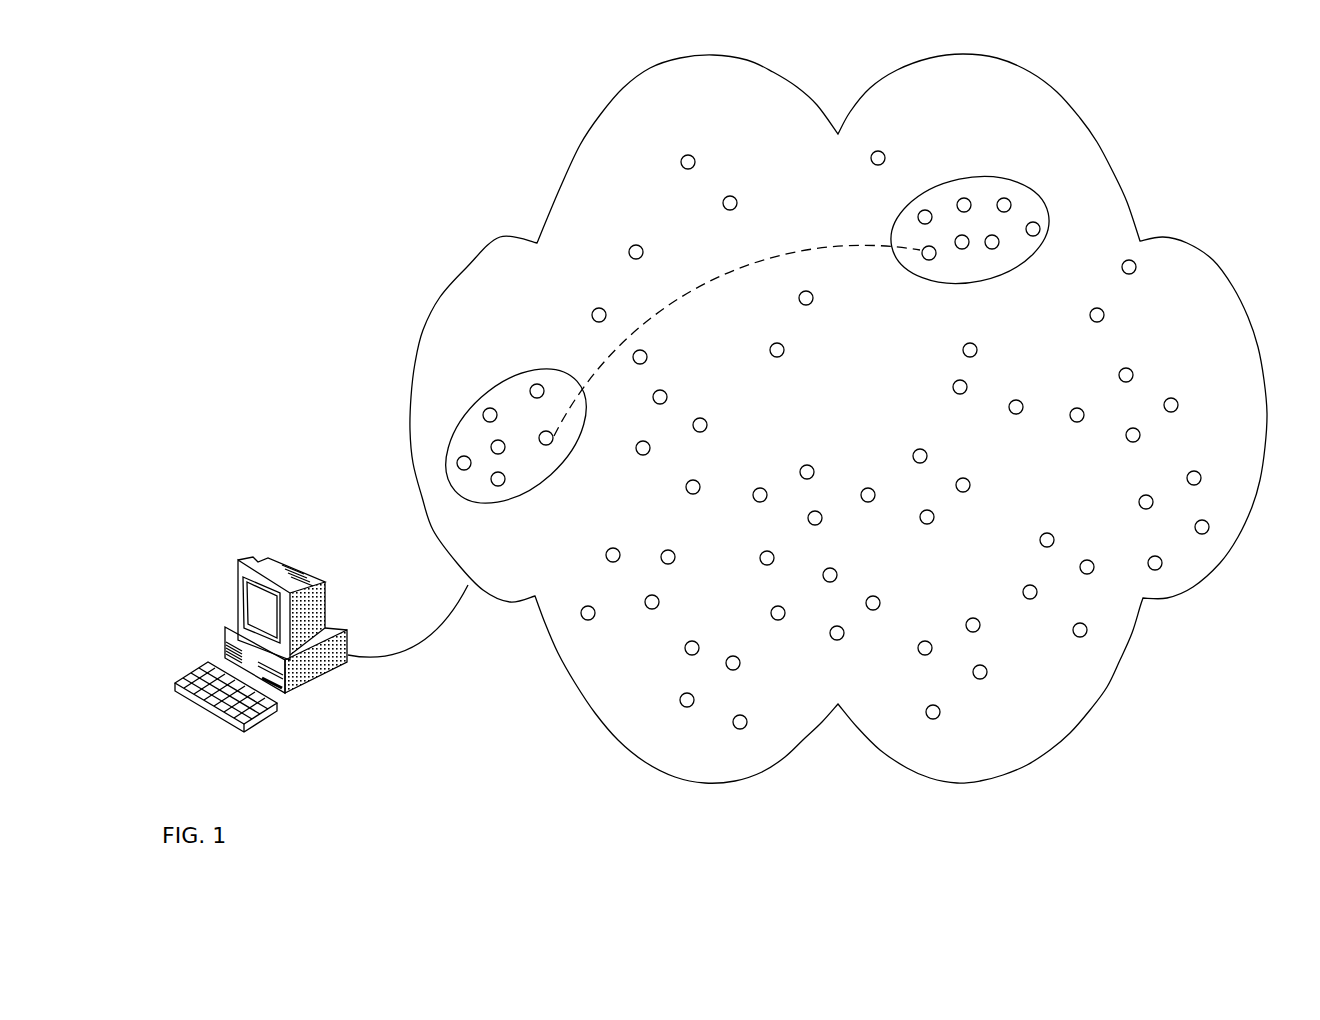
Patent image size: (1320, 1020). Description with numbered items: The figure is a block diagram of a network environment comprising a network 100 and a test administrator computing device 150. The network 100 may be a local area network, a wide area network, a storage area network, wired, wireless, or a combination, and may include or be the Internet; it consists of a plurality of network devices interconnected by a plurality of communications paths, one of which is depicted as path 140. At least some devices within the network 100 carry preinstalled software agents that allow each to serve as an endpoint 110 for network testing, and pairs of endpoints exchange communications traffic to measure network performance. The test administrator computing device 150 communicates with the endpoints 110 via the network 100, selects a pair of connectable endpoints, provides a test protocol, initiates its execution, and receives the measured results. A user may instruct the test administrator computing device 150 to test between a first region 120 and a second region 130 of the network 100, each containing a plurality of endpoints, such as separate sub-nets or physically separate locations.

The network 100 is at (838, 418).
The endpoint 110 is at (598, 306).
The first region 120 is at (478, 393).
The second region 130 is at (1047, 210).
The communication path 140 is at (740, 263).
The test administrator computing device 150 is at (317, 677).